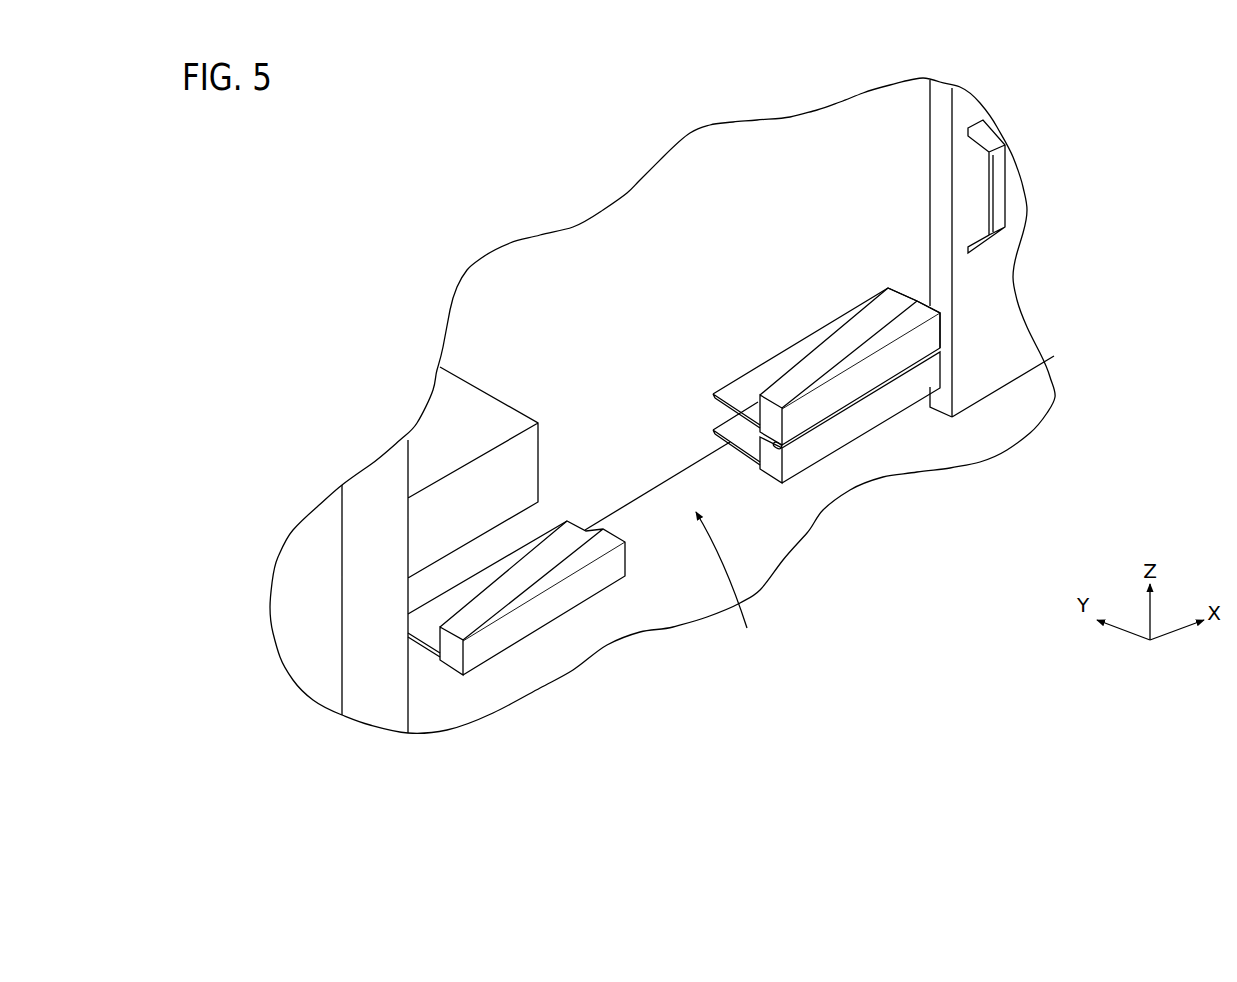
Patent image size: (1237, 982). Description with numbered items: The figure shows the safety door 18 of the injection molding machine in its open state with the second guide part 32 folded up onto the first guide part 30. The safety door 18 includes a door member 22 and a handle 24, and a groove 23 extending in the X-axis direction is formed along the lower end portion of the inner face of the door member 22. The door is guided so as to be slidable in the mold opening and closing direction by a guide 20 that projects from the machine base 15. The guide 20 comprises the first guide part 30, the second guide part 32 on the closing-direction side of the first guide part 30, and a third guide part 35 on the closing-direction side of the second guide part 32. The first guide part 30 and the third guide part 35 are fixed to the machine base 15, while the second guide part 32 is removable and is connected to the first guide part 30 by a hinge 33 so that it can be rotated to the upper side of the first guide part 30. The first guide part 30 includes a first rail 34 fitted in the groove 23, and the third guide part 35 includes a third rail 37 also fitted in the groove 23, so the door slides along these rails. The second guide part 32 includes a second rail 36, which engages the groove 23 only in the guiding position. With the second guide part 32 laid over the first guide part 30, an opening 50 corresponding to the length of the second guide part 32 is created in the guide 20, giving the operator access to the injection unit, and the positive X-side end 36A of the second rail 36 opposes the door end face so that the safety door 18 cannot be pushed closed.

The machine base 15 is at (775, 544).
The safety door 18 is at (1025, 266).
The guide 20 is at (713, 487).
The door member 22 is at (997, 268).
The groove 23 is at (940, 370).
The handle 24 is at (996, 169).
The first guide part 30 is at (822, 391).
The second guide part 32 is at (805, 355).
The hinge 33 is at (744, 399).
The first rail 34 is at (858, 428).
The third guide part 35 is at (516, 507).
The second rail 36 is at (889, 352).
The positive X-side end of the second rail 36A is at (942, 328).
The third rail 37 is at (558, 603).
The opening 50 is at (728, 586).